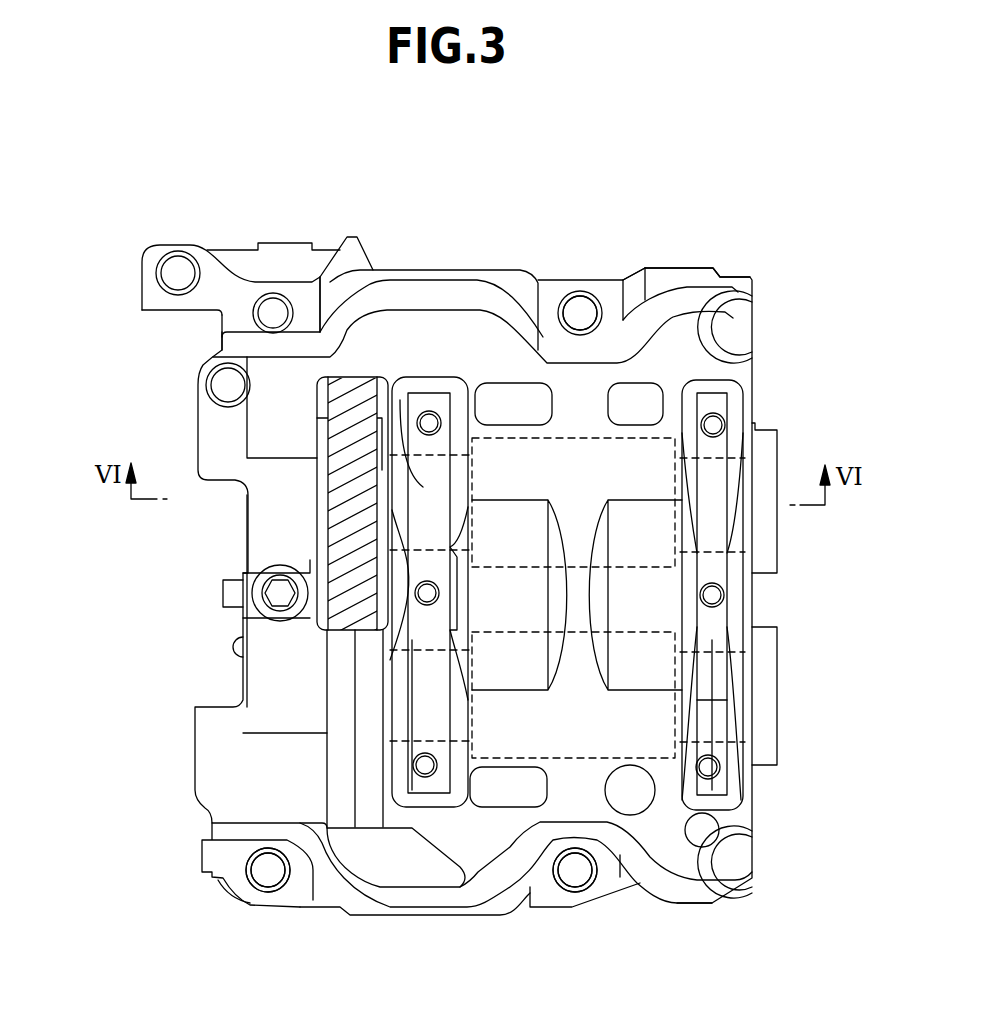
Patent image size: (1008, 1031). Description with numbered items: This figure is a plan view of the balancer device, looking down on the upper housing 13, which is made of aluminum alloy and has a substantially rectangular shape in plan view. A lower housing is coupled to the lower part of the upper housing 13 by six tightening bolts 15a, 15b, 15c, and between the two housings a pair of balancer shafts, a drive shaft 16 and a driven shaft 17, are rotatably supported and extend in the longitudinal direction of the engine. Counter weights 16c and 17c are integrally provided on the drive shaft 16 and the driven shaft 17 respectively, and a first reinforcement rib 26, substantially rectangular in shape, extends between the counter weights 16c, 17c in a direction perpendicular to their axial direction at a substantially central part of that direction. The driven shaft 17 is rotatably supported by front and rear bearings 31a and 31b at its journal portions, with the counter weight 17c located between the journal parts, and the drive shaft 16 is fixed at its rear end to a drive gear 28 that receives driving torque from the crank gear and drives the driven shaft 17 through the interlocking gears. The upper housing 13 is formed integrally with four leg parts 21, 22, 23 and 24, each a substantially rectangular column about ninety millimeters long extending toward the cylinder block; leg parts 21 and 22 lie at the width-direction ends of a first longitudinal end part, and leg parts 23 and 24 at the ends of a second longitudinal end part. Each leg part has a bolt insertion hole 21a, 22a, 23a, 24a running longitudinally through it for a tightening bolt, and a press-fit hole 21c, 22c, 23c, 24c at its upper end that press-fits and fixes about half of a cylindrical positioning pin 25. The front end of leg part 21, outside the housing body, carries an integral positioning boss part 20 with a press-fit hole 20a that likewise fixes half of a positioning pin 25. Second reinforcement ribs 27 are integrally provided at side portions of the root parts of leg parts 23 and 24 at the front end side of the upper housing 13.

The upper housing 13 is at (438, 327).
The tightening bolt 15a is at (433, 410).
The tightening bolt 15b is at (428, 593).
The tightening bolt 15c is at (427, 765).
The drive shaft 16 is at (402, 420).
The counter weight 16c is at (575, 463).
The driven shaft 17 is at (713, 670).
The counter weight 17c is at (613, 727).
The positioning boss part 20 is at (182, 240).
The press-fit hole 20a is at (173, 276).
The leg part 21 is at (307, 297).
The bolt insertion hole 21a is at (273, 303).
The press-fit hole 21c is at (258, 328).
The leg part 22 is at (232, 882).
The bolt insertion hole 22a is at (267, 878).
The press-fit hole 22c is at (247, 870).
The leg part 23 is at (597, 293).
The bolt insertion hole 23a is at (580, 313).
The press-fit hole 23c is at (597, 307).
The leg part 24 is at (603, 883).
The bolt insertion hole 24a is at (572, 873).
The press-fit hole 24c is at (582, 877).
The cylindrical positioning pin 25 is at (163, 245).
The first reinforcement rib 26 is at (577, 540).
The second reinforcement rib 27 is at (663, 278).
The drive gear 28 is at (350, 418).
The front bearing 31a is at (708, 697).
The rear bearing 31b is at (427, 705).